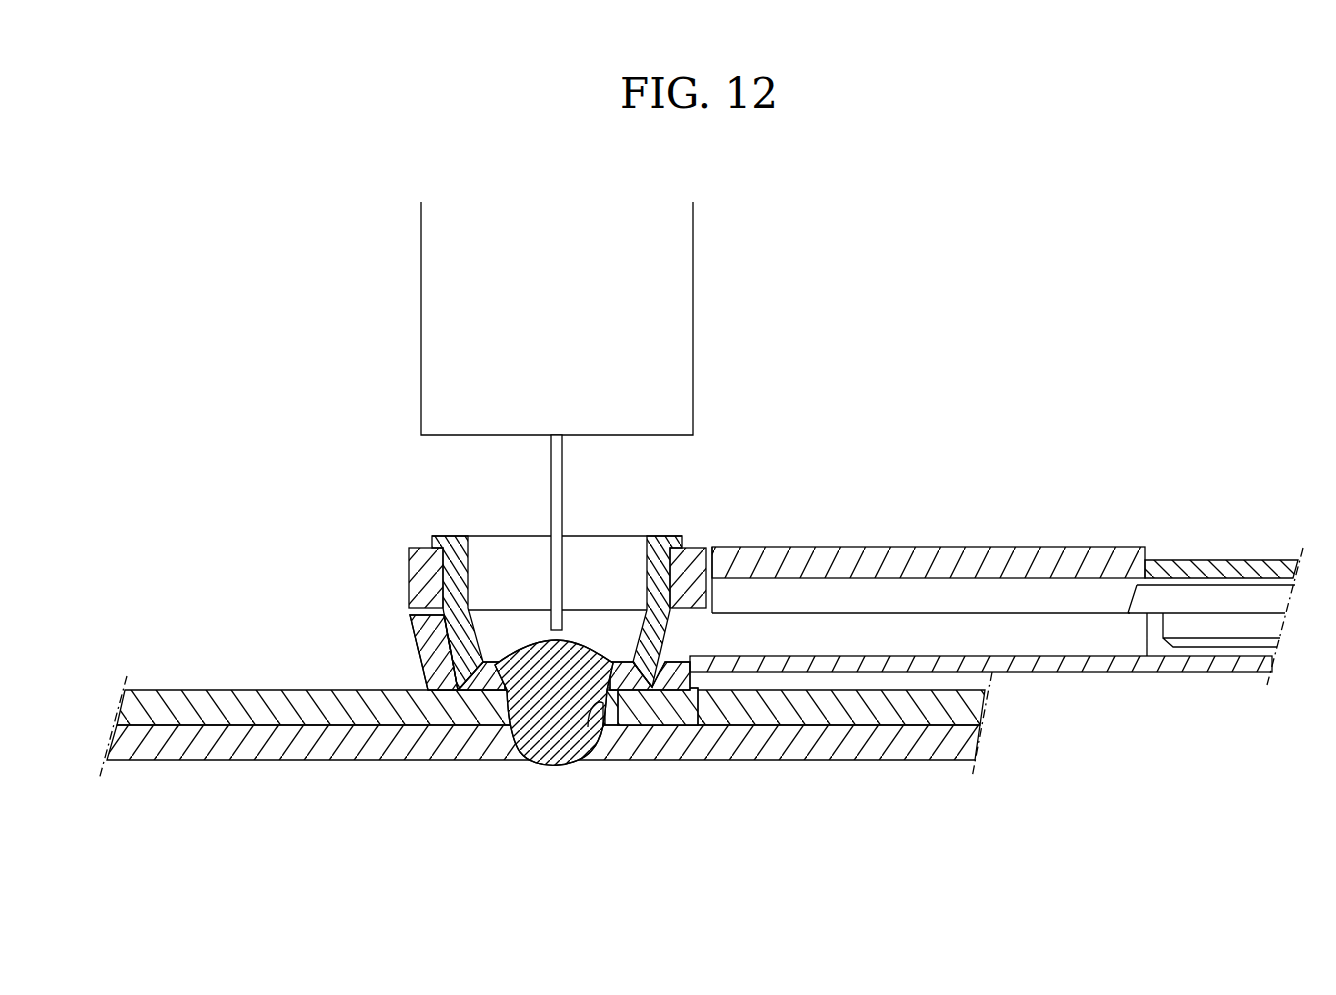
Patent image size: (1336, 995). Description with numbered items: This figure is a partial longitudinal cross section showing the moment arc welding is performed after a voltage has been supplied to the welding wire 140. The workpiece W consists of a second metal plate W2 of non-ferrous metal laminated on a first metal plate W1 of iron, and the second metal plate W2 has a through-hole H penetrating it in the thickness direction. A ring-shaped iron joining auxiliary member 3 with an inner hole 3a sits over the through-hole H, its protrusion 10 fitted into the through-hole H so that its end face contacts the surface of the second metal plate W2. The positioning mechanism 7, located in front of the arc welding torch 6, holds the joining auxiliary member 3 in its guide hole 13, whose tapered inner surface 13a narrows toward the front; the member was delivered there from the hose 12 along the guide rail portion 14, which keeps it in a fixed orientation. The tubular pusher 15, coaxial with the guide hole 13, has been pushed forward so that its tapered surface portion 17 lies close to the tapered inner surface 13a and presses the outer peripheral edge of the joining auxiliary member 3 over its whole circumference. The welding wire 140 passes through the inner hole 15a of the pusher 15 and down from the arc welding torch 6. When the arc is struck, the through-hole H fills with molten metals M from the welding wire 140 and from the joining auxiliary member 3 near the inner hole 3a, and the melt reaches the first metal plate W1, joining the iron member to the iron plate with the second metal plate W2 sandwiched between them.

The arc welding torch 6 is at (421, 312).
The welding wire 140 is at (563, 472).
The pusher 15 is at (557, 566).
The inner hole 15a is at (478, 548).
The positioning mechanism 7 is at (858, 492).
The joining auxiliary member 3 is at (611, 640).
The hose 12 is at (1228, 560).
The guide rail portion 14 is at (1060, 672).
The protrusion 10 is at (625, 725).
The tapered surface portion 17 is at (693, 690).
The guide hole 13 is at (480, 695).
The tapered inner surface 13a is at (480, 645).
The workpiece W is at (545, 674).
The first metal plate W1 is at (235, 725).
The second metal plate W2 is at (280, 690).
The molten metals M is at (554, 684).
The through-hole H is at (532, 742).
The inner hole 3a is at (591, 728).